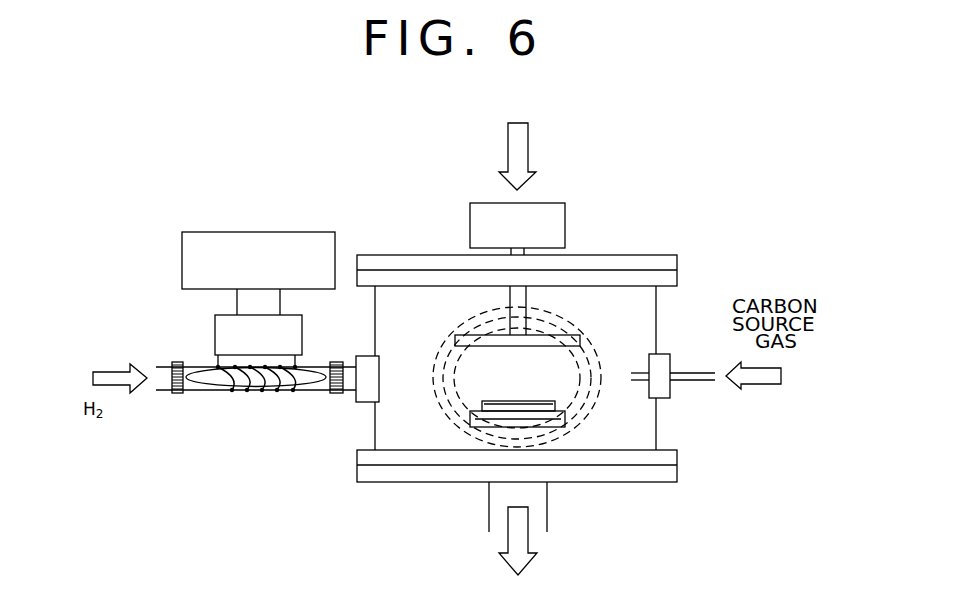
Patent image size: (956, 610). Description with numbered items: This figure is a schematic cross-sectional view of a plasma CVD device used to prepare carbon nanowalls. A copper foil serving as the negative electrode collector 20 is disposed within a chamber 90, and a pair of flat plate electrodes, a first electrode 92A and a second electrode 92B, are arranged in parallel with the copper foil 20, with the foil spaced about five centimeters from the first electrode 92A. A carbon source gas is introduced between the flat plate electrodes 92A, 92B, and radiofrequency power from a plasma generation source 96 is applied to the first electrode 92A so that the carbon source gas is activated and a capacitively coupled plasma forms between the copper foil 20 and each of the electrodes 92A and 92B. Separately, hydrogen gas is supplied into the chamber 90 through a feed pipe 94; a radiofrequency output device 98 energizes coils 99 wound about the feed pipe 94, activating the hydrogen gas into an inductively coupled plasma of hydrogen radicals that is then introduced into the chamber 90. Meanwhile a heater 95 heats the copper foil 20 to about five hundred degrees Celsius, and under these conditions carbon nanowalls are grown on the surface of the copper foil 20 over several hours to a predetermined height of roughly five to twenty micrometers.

The negative electrode collector 20 is at (480, 390).
The chamber 90 is at (656, 299).
The first electrode 92A is at (565, 335).
The second electrode 92B is at (565, 425).
The feed pipe 94 is at (205, 391).
The heater 95 is at (486, 418).
The plasma generation source 96 is at (545, 212).
The radiofrequency output device 98 is at (279, 241).
The coils 99 is at (293, 391).